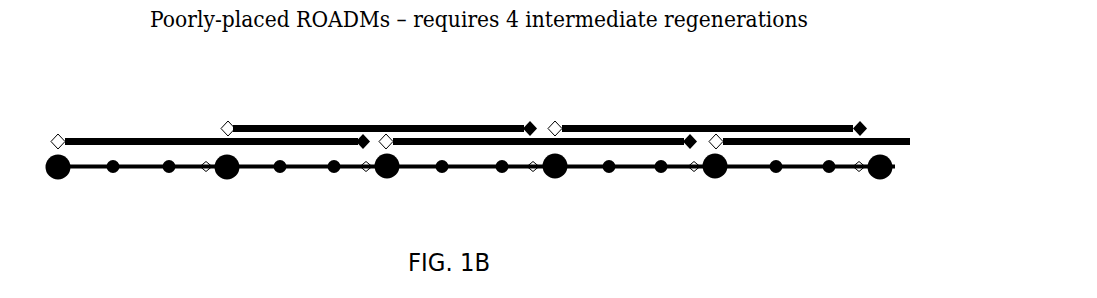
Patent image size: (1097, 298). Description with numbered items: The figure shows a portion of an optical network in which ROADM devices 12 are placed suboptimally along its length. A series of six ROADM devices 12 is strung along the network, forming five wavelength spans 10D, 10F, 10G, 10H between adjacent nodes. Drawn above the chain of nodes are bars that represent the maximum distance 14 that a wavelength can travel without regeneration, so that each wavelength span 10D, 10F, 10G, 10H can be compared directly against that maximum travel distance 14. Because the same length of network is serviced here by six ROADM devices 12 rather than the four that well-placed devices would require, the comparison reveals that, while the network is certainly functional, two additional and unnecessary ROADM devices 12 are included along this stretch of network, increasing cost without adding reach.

The maximum distance a wavelength can travel without regeneration 14 is at (78, 139).
The ROADM device 12 is at (55, 179).
The wavelength span 10D is at (168, 173).
The wavelength span 10F is at (333, 173).
The wavelength span 10G is at (659, 173).
The wavelength span 10H is at (827, 173).